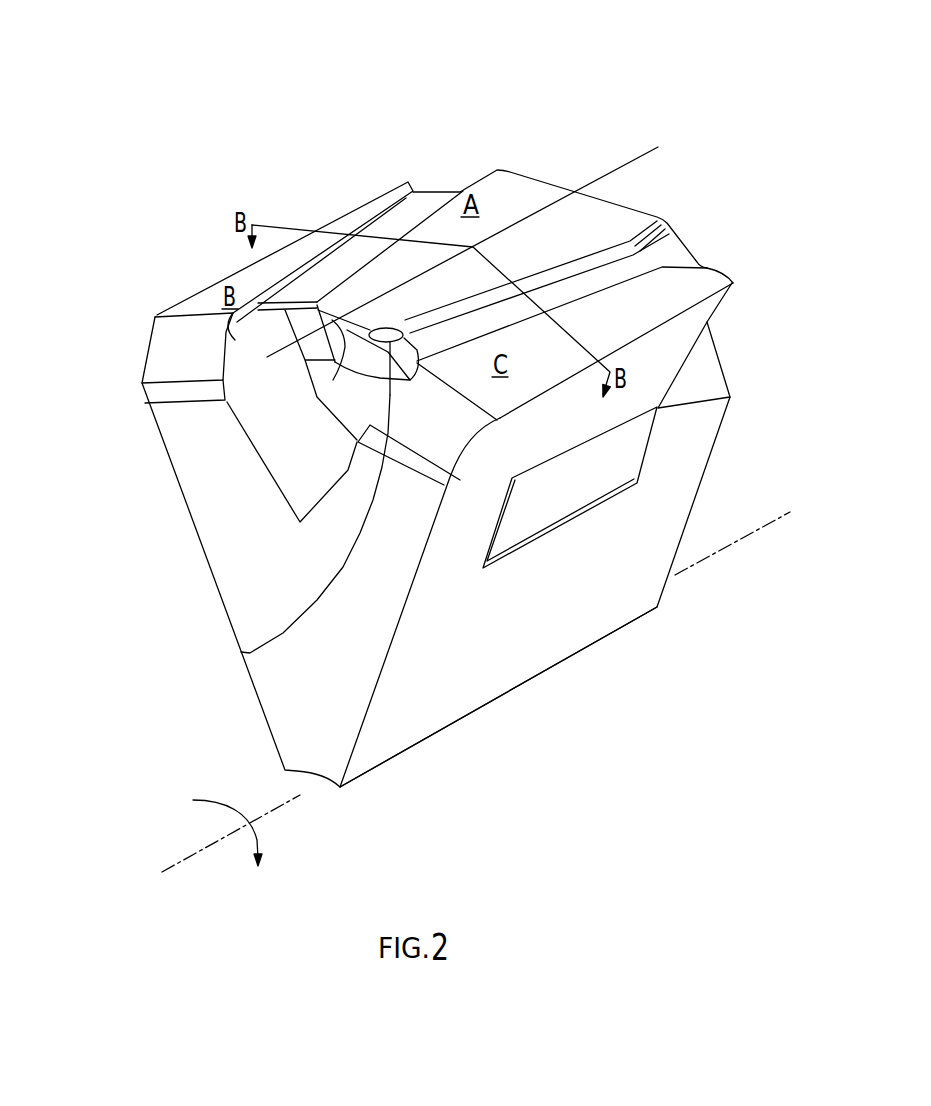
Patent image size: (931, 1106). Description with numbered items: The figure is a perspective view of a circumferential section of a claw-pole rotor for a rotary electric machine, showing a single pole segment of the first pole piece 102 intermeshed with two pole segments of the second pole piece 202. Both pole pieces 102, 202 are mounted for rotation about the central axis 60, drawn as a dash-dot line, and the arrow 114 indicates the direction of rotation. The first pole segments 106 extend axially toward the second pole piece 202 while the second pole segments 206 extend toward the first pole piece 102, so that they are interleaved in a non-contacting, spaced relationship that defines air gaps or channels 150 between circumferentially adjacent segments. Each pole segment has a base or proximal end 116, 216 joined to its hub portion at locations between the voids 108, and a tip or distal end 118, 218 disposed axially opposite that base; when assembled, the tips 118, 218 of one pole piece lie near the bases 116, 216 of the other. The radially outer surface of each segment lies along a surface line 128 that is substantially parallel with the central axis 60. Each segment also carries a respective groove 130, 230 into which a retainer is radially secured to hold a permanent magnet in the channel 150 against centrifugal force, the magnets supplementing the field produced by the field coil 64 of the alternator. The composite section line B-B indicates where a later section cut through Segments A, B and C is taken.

The axis 60 is at (180, 862).
The field coil 64 is at (628, 450).
The first pole piece 102 is at (597, 640).
The first pole segments 106 is at (541, 174).
The voids 108 is at (295, 493).
The arrow 114 is at (220, 793).
The base or proximal end 116 is at (507, 170).
The tip or distal end 118 is at (317, 402).
The surface line 128 is at (658, 147).
The groove 130 is at (240, 652).
The channels 150 is at (441, 176).
The second pole piece 202 is at (410, 746).
The second pole segments 206 is at (226, 268).
The base or proximal end 216 is at (160, 342).
The tip or distal end 218 is at (396, 180).
The groove 230 is at (226, 392).